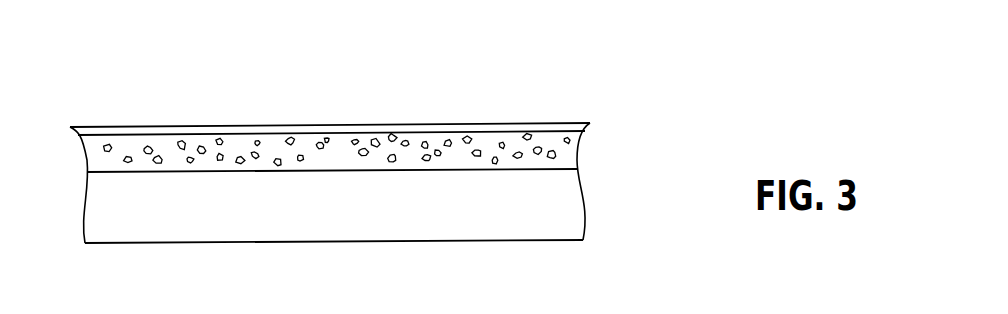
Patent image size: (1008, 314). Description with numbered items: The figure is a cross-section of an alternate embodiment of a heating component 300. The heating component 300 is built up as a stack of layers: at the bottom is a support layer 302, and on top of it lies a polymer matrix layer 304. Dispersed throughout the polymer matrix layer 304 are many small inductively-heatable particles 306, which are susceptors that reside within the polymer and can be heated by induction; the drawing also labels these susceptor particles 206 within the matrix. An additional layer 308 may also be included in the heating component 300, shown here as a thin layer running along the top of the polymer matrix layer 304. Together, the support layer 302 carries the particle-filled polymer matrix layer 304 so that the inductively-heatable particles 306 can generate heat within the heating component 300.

The heating component 300 is at (513, 240).
The support layer 302 is at (570, 193).
The polymer matrix layer 304 is at (570, 157).
The inductively-heatable particles 306 is at (148, 153).
The additional layer 308 is at (580, 140).
The inductively-heatable particles 206 is at (408, 163).